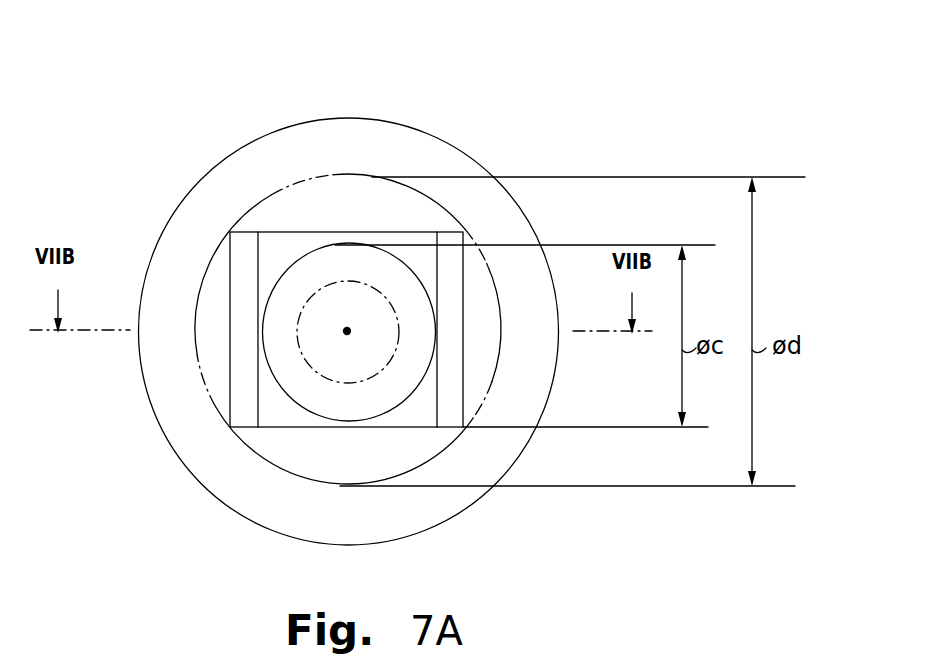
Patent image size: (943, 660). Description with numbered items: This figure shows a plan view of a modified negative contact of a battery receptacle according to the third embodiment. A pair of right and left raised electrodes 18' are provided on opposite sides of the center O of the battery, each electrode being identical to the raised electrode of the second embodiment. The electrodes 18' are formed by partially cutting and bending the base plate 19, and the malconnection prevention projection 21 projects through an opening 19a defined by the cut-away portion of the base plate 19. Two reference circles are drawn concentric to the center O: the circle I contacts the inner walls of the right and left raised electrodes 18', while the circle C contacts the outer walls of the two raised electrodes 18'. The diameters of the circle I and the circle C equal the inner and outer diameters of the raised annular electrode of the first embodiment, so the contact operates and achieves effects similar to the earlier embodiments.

The base plate 19 is at (294, 142).
The opening 19a is at (272, 257).
The raised electrode 18' is at (354, 312).
The circle C is at (371, 177).
The malconnection prevention projection 21 is at (333, 373).
The circle I is at (302, 410).
The center O is at (397, 298).